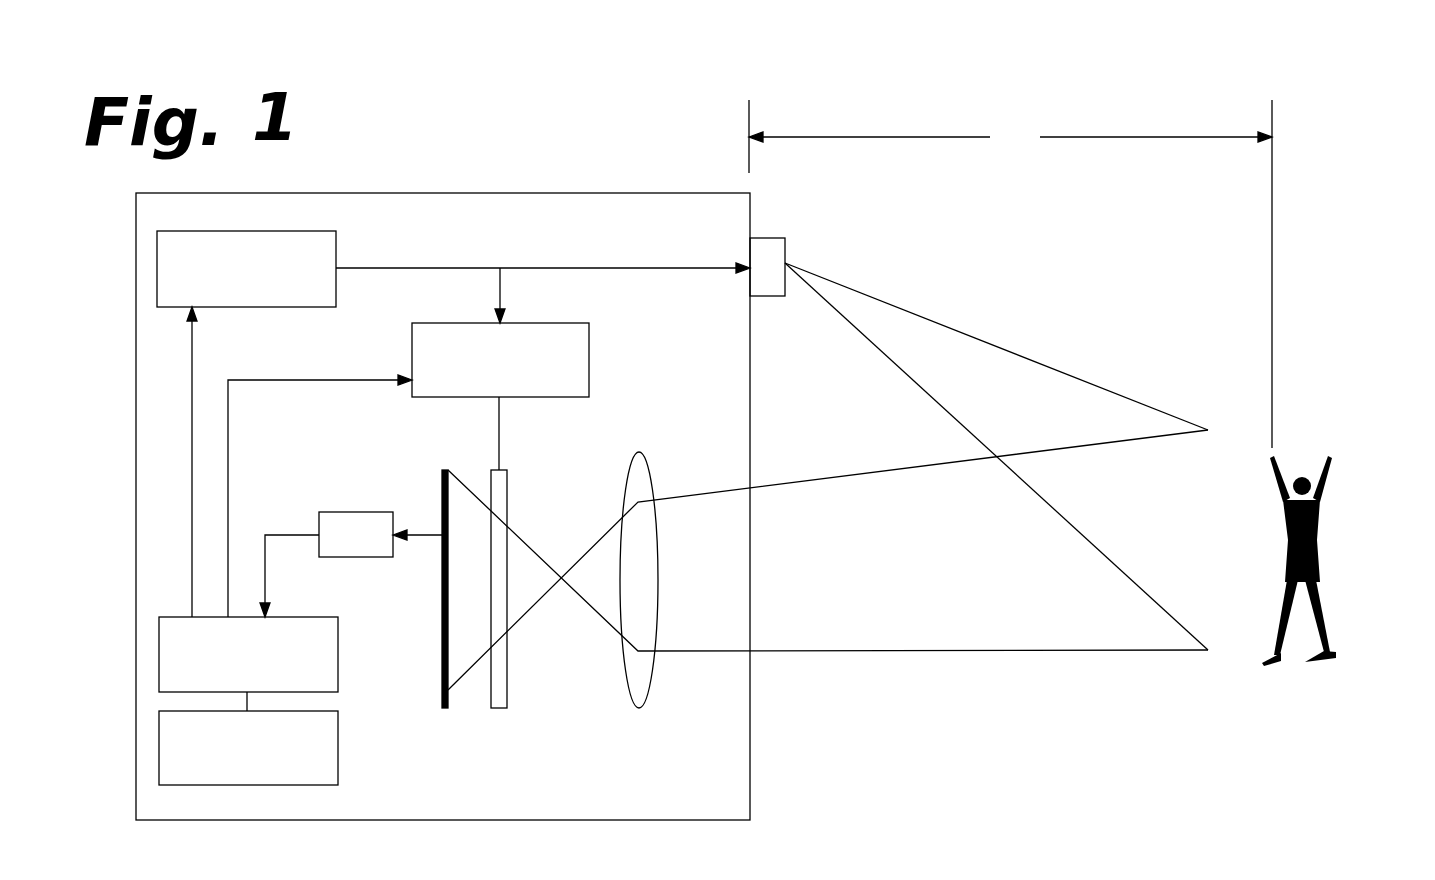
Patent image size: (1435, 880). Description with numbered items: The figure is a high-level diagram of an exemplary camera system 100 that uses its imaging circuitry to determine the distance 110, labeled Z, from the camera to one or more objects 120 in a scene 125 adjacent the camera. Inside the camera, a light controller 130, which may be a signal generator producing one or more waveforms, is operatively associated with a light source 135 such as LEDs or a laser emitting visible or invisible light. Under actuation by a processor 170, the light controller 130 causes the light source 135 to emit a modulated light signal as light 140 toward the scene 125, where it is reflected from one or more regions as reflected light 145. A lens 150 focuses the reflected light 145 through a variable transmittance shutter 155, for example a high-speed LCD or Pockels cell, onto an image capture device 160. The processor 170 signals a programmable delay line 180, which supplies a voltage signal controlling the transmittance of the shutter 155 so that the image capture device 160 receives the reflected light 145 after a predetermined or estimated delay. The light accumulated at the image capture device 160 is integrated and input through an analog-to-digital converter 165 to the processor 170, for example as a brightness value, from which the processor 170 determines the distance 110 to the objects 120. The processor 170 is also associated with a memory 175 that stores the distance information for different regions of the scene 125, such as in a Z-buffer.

The camera system 100 is at (443, 506).
The distance 110 is at (1093, 137).
The object 120 is at (1281, 655).
The scene 125 is at (1315, 420).
The light controller 130 is at (245, 307).
The light source 135 is at (772, 238).
The light 140 is at (1003, 347).
The reflected light 145 is at (983, 651).
The lens 150 is at (647, 452).
The variable transmittance shutter 155 is at (507, 708).
The image capture device 160 is at (442, 475).
The analog-to-digital converter 165 is at (350, 512).
The processor 170 is at (338, 652).
The memory 175 is at (338, 755).
The programmable delay line 180 is at (589, 362).